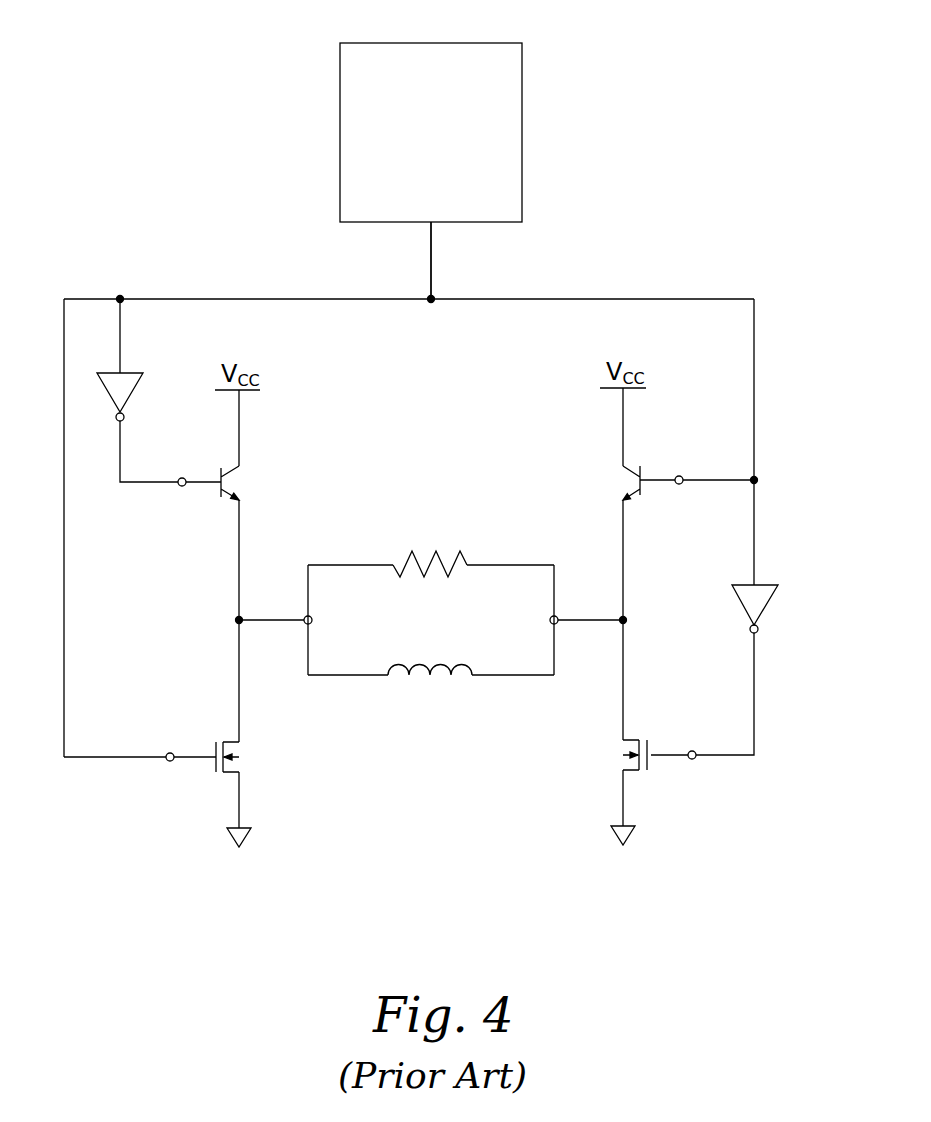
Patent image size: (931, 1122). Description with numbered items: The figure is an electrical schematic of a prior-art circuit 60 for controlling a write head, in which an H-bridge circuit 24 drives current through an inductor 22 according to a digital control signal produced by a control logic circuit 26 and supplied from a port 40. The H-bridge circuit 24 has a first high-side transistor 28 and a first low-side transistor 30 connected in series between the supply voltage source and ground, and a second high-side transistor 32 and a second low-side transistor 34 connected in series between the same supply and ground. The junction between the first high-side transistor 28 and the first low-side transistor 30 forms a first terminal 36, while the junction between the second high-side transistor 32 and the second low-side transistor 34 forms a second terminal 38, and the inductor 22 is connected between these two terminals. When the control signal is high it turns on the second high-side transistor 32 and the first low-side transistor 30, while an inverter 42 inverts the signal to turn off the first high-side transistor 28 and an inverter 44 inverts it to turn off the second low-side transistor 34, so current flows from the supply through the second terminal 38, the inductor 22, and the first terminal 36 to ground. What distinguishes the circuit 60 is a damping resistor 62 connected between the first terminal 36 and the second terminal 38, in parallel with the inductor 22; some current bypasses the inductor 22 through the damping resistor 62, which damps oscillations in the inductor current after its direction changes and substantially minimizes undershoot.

The inductor 22 is at (433, 678).
The H-bridge circuit 24 is at (442, 411).
The control logic circuit 26 is at (522, 128).
The first high-side transistor 28 is at (228, 470).
The first low-side transistor 30 is at (241, 745).
The second high-side transistor 32 is at (636, 474).
The second low-side transistor 34 is at (623, 745).
The first terminal 36 is at (312, 624).
The second terminal 38 is at (550, 620).
The port 40 is at (431, 225).
The inverter 42 is at (133, 388).
The inverter 44 is at (768, 606).
The circuit 60 is at (712, 168).
The damping resistor 62 is at (437, 550).